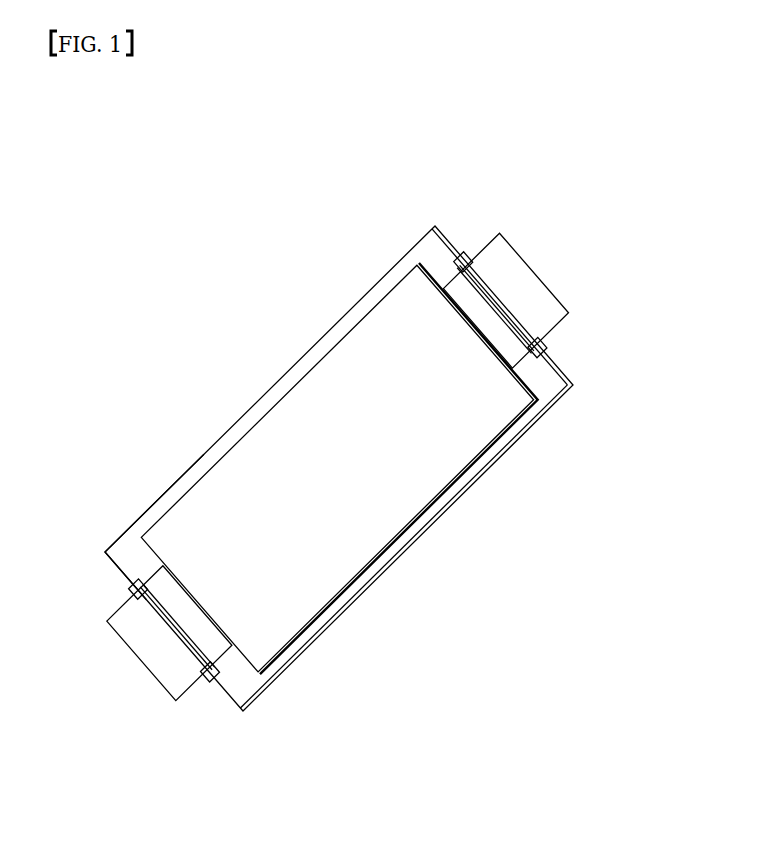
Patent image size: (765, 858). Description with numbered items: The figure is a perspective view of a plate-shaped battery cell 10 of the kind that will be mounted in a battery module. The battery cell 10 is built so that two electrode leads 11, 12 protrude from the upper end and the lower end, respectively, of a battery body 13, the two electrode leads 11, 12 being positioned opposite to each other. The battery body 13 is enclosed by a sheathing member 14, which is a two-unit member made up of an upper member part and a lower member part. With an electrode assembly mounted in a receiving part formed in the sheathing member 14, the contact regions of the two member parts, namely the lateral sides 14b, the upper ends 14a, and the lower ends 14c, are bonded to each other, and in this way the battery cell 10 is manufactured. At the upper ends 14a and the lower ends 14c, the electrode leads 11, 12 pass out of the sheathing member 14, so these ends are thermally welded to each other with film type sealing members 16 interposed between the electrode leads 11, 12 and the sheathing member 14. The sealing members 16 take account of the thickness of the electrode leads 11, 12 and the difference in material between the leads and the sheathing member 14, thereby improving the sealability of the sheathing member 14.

The plate-shaped battery cell 10 is at (123, 223).
The electrode lead 11 is at (157, 663).
The electrode lead 12 is at (547, 287).
The battery body 13 is at (293, 415).
The sheathing member 14 is at (421, 234).
The upper ends 14a is at (132, 547).
The lateral sides 14b is at (430, 522).
The lower ends 14c is at (557, 378).
The film type sealing member 16 is at (468, 257).